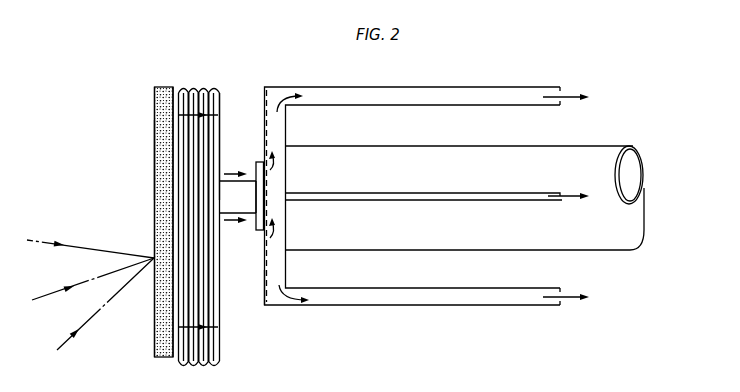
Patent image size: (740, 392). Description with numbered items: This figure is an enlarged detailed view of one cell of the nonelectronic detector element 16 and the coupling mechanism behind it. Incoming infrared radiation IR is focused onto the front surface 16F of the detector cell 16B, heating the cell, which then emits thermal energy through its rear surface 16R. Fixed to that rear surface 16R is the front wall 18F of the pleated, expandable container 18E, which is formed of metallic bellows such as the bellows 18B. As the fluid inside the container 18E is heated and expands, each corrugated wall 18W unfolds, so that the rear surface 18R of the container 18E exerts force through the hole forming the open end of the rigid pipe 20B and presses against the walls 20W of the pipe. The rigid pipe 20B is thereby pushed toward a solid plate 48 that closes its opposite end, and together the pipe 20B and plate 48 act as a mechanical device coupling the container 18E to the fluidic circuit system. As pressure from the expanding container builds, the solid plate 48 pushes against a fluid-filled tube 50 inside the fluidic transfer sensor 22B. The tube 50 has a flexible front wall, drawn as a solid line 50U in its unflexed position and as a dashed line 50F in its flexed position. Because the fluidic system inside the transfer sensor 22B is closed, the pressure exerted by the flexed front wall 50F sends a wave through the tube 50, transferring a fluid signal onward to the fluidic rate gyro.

The nonelectronic detector element 16 is at (157, 79).
The detector cell 16B is at (153, 97).
The front surface 16F is at (152, 128).
The rear surface 16R is at (176, 96).
The expandable container 18E is at (199, 83).
The bellows 18B is at (204, 98).
The corrugated wall 18W is at (213, 91).
The rear surface 18R is at (219, 90).
The front wall 18F is at (170, 312).
The rigid pipe 20B is at (225, 181).
The walls 20W is at (226, 192).
The solid plate 48 is at (263, 153).
The fluid-filled tube 50 is at (276, 108).
The flexed front wall 50F is at (268, 244).
The unflexed front wall 50U is at (265, 276).
The fluidic transfer sensor 22B is at (568, 148).
The infrared radiation IR is at (97, 249).